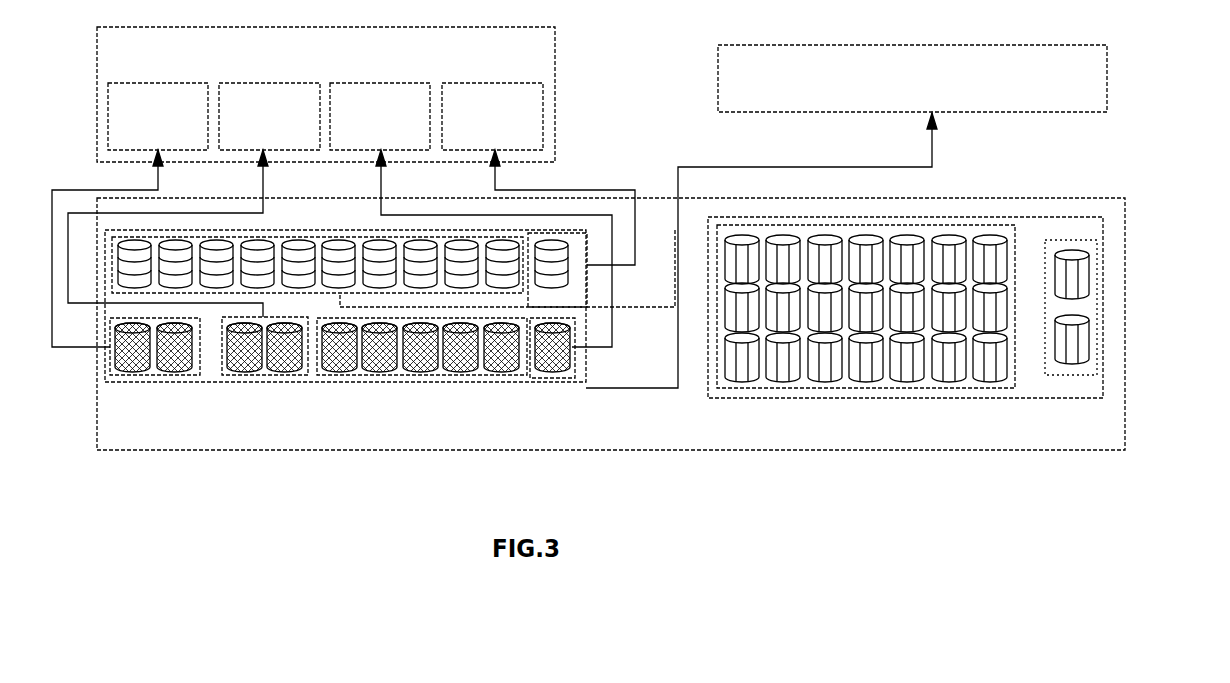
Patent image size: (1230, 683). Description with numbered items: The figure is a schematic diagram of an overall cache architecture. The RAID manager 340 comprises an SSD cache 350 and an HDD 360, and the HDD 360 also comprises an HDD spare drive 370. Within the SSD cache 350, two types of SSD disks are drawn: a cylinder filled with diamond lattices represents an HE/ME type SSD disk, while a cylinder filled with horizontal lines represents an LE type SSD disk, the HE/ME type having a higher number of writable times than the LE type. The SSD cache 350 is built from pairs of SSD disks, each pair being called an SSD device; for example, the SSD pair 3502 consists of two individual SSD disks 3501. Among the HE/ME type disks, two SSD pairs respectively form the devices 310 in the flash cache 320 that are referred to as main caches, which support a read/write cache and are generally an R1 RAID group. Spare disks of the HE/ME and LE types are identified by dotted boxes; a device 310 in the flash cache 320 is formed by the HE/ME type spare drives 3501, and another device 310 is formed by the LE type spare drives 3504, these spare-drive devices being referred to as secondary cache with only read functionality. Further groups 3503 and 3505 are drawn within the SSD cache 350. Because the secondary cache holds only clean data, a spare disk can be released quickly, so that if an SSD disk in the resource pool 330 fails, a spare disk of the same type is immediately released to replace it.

The device 310 is at (325, 116).
The flash cache 320 is at (556, 56).
The resource pool 330 is at (1108, 88).
The RAID manager 340 is at (1126, 432).
The SSD cache 350 is at (117, 382).
The individual SSD disk 3501 is at (250, 378).
The SSD pair 3502 is at (295, 378).
The RAID group 3503 is at (545, 378).
The LE type spare drives 3504 is at (590, 282).
The RAID group 3505 is at (267, 295).
The HDD 360 is at (1103, 373).
The HDD spare drive 370 is at (1097, 300).